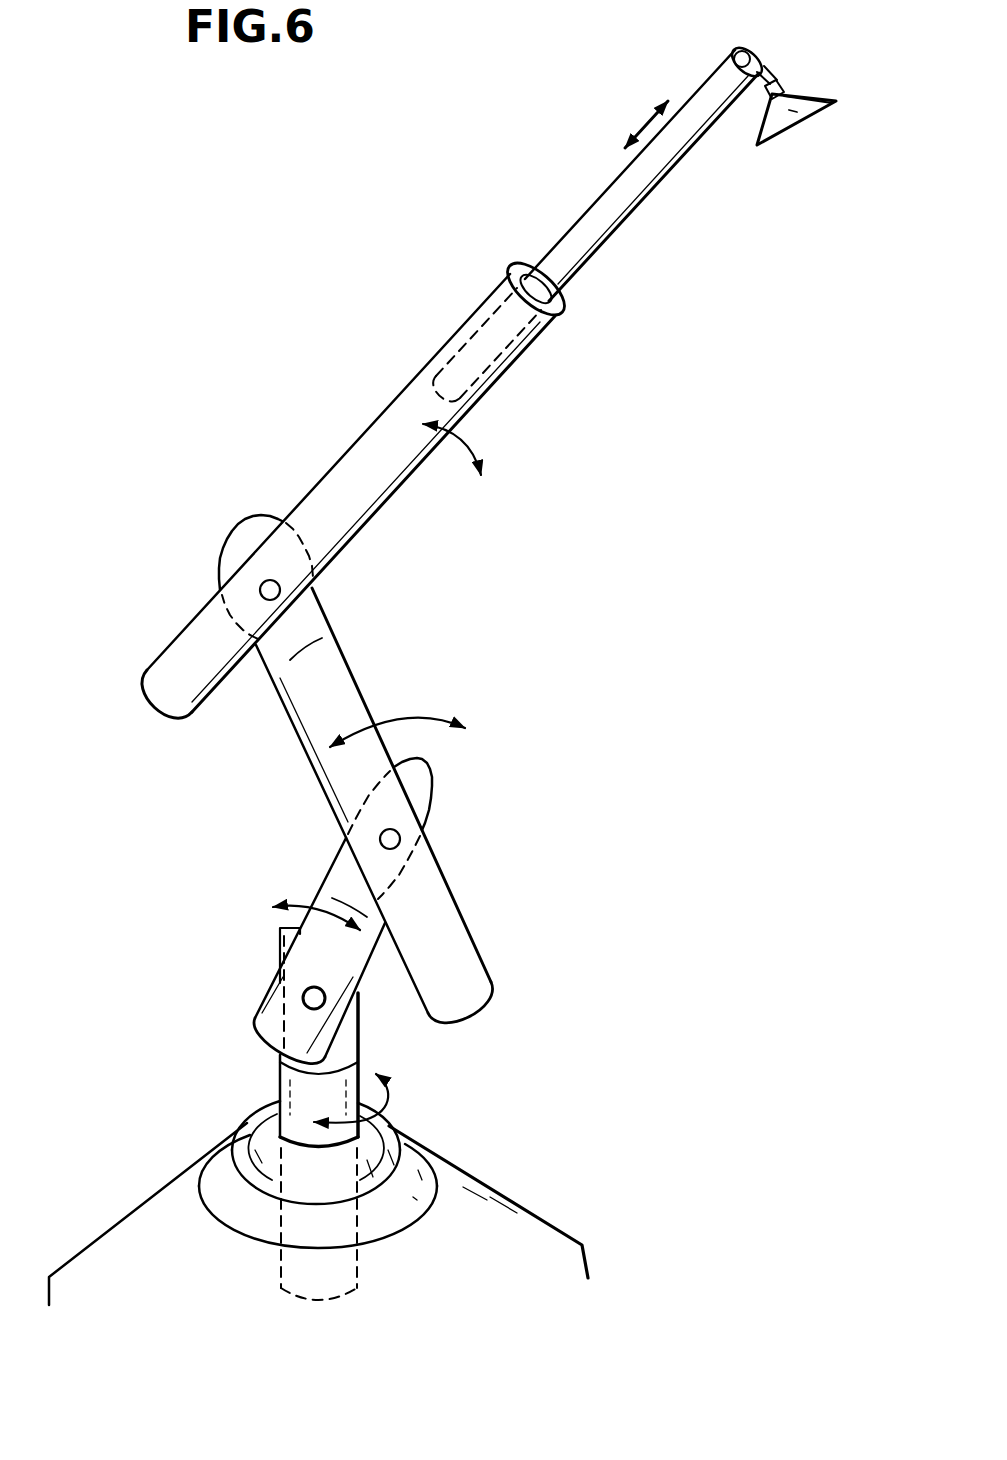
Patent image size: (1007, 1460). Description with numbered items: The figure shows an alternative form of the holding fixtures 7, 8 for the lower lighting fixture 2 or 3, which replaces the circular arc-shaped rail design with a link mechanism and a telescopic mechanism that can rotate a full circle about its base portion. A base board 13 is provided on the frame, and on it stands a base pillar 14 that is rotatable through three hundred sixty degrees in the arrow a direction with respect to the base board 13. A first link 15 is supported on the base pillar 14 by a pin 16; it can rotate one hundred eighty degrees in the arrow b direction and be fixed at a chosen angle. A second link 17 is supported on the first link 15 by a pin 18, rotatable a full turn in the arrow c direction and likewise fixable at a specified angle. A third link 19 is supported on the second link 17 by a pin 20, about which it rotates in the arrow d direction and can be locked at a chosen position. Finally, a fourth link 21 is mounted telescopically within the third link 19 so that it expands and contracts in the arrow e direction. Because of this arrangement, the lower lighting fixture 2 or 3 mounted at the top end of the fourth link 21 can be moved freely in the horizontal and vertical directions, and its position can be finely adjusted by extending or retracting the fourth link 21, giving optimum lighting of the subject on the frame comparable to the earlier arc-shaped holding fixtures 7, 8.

The lower lighting fixture 2 is at (771, 135).
The lower lighting fixture 3 is at (758, 146).
The holding fixture 7 is at (488, 380).
The holding fixture 8 is at (488, 380).
The base board 13 is at (558, 1233).
The base pillar 14 is at (365, 1066).
The first link 15 is at (443, 798).
The pin 16 is at (302, 1000).
The second link 17 is at (389, 803).
The pin 18 is at (401, 840).
The third link 19 is at (362, 486).
The pin 20 is at (262, 582).
The fourth link 21 is at (650, 191).